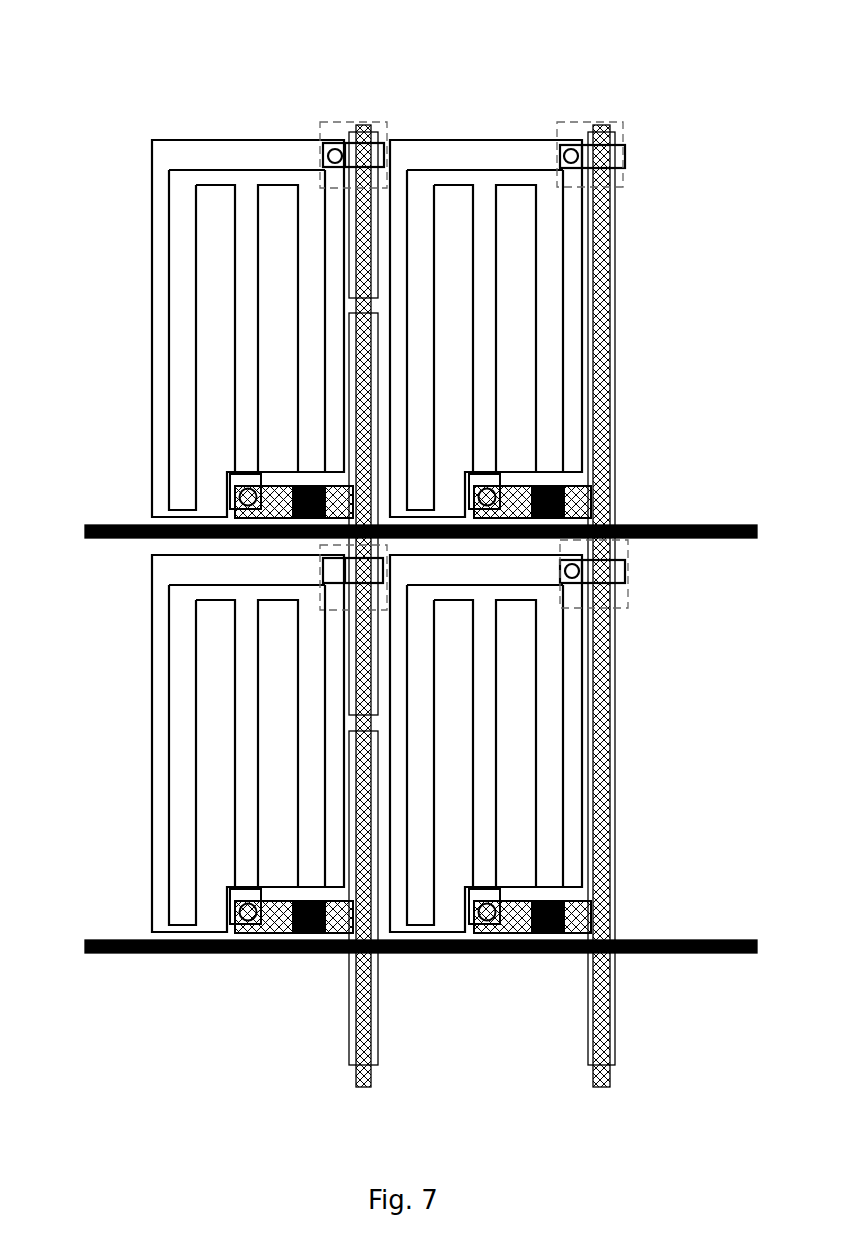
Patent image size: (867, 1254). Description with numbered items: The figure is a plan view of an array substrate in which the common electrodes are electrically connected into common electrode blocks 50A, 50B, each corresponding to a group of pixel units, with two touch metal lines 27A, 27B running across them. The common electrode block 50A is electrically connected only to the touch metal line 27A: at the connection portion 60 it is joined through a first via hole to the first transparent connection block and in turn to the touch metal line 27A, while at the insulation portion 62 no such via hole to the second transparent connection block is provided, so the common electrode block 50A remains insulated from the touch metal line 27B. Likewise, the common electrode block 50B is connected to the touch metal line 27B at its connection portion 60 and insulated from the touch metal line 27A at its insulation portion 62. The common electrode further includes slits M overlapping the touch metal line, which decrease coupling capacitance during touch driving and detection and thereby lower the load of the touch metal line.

The common electrode block 50A is at (172, 158).
The common electrode block 50B is at (160, 623).
The touch metal line 27A is at (353, 132).
The touch metal line 27B is at (590, 132).
The connection portion 60 is at (328, 130).
The insulation portion 62 is at (557, 129).
The slits M is at (385, 822).